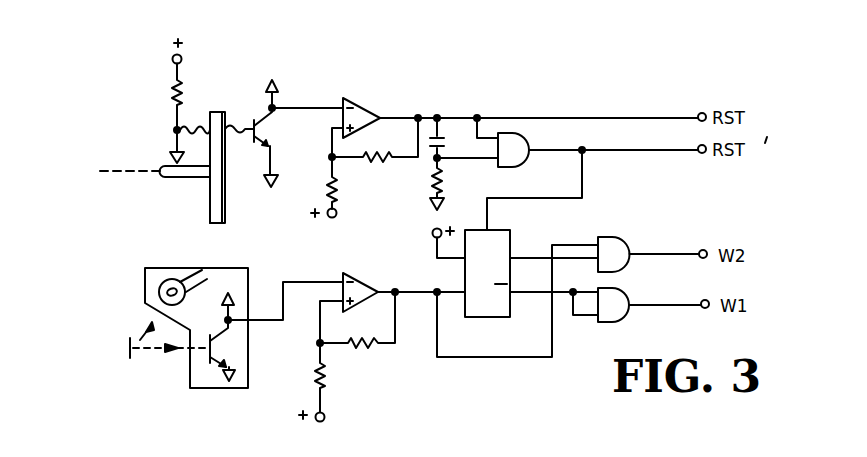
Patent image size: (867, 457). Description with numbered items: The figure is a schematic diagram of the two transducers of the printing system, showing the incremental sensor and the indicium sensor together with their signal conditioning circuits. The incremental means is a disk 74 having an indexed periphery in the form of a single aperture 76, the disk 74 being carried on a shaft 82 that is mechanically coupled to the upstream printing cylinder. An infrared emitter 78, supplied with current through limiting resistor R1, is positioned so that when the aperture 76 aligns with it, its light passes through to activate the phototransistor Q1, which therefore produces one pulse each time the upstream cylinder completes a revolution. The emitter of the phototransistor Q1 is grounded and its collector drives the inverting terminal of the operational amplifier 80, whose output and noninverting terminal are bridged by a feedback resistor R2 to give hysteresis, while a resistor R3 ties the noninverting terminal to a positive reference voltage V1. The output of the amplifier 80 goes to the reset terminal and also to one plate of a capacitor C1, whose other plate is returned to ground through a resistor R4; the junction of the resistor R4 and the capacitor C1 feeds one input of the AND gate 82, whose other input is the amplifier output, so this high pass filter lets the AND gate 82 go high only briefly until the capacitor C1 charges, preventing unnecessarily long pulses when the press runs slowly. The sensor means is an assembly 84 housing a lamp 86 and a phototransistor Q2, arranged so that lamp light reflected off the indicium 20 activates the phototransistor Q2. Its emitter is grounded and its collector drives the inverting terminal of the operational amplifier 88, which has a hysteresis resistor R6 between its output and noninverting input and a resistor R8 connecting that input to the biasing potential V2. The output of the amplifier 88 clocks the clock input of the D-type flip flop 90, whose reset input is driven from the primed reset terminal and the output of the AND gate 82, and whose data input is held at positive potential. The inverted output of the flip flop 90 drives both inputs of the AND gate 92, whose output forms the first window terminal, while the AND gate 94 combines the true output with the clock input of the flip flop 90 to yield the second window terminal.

The indicium 20 is at (130, 342).
The disk 74 is at (228, 206).
The aperture 76 is at (222, 112).
The infrared emitter 78 is at (172, 131).
The operational amplifier 80 is at (358, 102).
The shaft / AND gate 82 is at (202, 178).
The assembly 84 is at (212, 389).
The lamp 86 is at (168, 280).
The operational amplifier 88 is at (362, 284).
The D-type flip flop 90 is at (490, 318).
The AND gate 92 is at (631, 300).
The AND gate 94 is at (628, 240).
The phototransistor Q1 is at (248, 136).
The phototransistor Q2 is at (202, 358).
The limiting resistor R1 is at (170, 101).
The feedback resistor R2 is at (356, 162).
The resistor R3 is at (330, 186).
The resistor R4 is at (453, 185).
The resistor R6 is at (352, 347).
The resistor R8 is at (302, 379).
The capacitor C1 is at (450, 133).
The positive reference voltage V1 is at (330, 227).
The biasing potential V2 is at (327, 424).